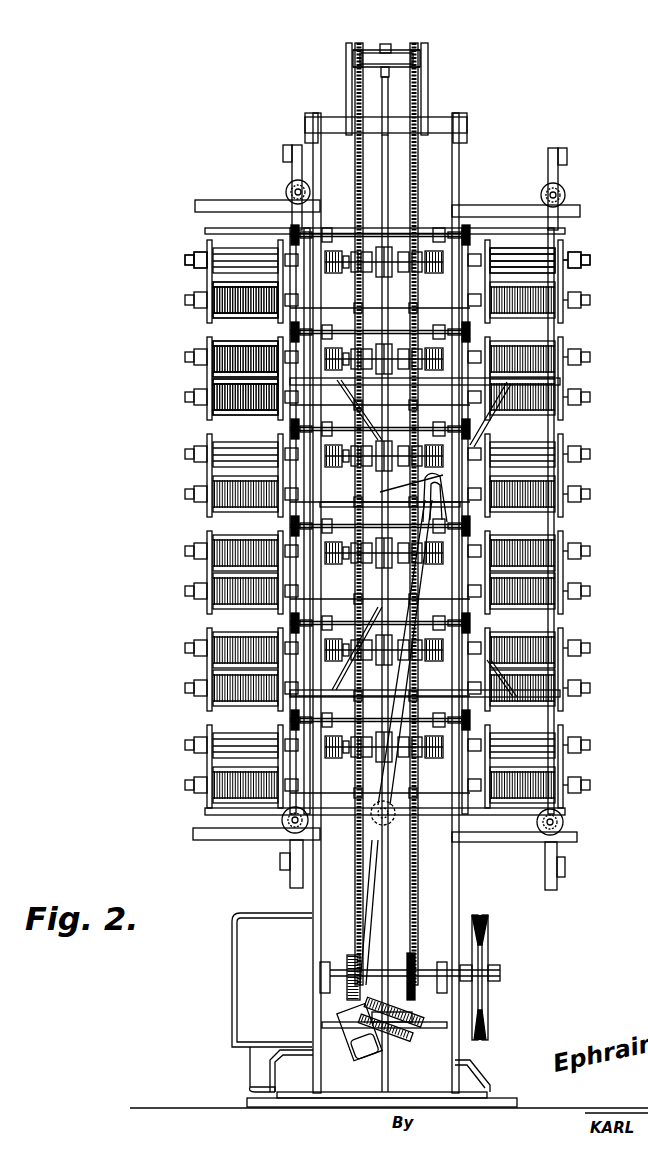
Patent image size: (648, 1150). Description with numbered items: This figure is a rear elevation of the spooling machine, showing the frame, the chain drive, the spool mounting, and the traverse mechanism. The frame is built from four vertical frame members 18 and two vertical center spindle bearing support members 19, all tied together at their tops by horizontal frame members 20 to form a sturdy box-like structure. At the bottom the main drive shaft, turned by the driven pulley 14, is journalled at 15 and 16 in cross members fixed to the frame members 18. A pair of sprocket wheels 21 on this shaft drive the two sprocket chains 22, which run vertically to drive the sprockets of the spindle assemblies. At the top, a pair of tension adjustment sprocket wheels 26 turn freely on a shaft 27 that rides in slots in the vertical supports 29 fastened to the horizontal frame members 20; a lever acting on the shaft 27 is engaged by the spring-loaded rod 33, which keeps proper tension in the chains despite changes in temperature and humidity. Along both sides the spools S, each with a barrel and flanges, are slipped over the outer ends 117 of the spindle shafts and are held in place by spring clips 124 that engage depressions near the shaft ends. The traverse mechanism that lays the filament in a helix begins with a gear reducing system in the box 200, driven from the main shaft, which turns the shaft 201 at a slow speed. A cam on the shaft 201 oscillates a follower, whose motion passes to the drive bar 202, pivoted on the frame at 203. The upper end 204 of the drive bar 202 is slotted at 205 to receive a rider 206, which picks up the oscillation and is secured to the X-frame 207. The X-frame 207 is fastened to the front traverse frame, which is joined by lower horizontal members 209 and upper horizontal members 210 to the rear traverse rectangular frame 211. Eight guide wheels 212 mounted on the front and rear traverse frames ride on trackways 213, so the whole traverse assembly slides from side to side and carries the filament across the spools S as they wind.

The driven pulley 14 is at (490, 935).
The journal 15 is at (321, 975).
The journal 16 is at (442, 962).
The vertical frame members 18 is at (321, 160).
The center spindle bearing support members 19 is at (388, 165).
The horizontal frame members 20 is at (305, 128).
The sprocket wheels 21 is at (355, 988).
The sprocket chains 22 is at (362, 905).
The tension adjustment sprocket wheels 26 is at (410, 50).
The shaft 27 is at (353, 57).
The vertical supports 29 is at (346, 79).
The rod 33 is at (388, 92).
The outer ends of spindle shafts 117 is at (190, 263).
The spring clips 124 is at (213, 305).
The spool S is at (230, 395).
The box 200 is at (290, 974).
The shaft 201 is at (440, 1030).
The drive bar 202 is at (405, 600).
The pivot 203 is at (395, 818).
The upper end of drive bar 204 is at (445, 485).
The slot 205 is at (380, 492).
The rider 206 is at (390, 511).
The X-frame 207 is at (485, 425).
The lower horizontal members 209 is at (281, 866).
The upper horizontal members 210 is at (283, 155).
The rear traverse rectangular frame 211 is at (291, 880).
The guide wheels 212 is at (287, 194).
The trackways 213 is at (210, 202).